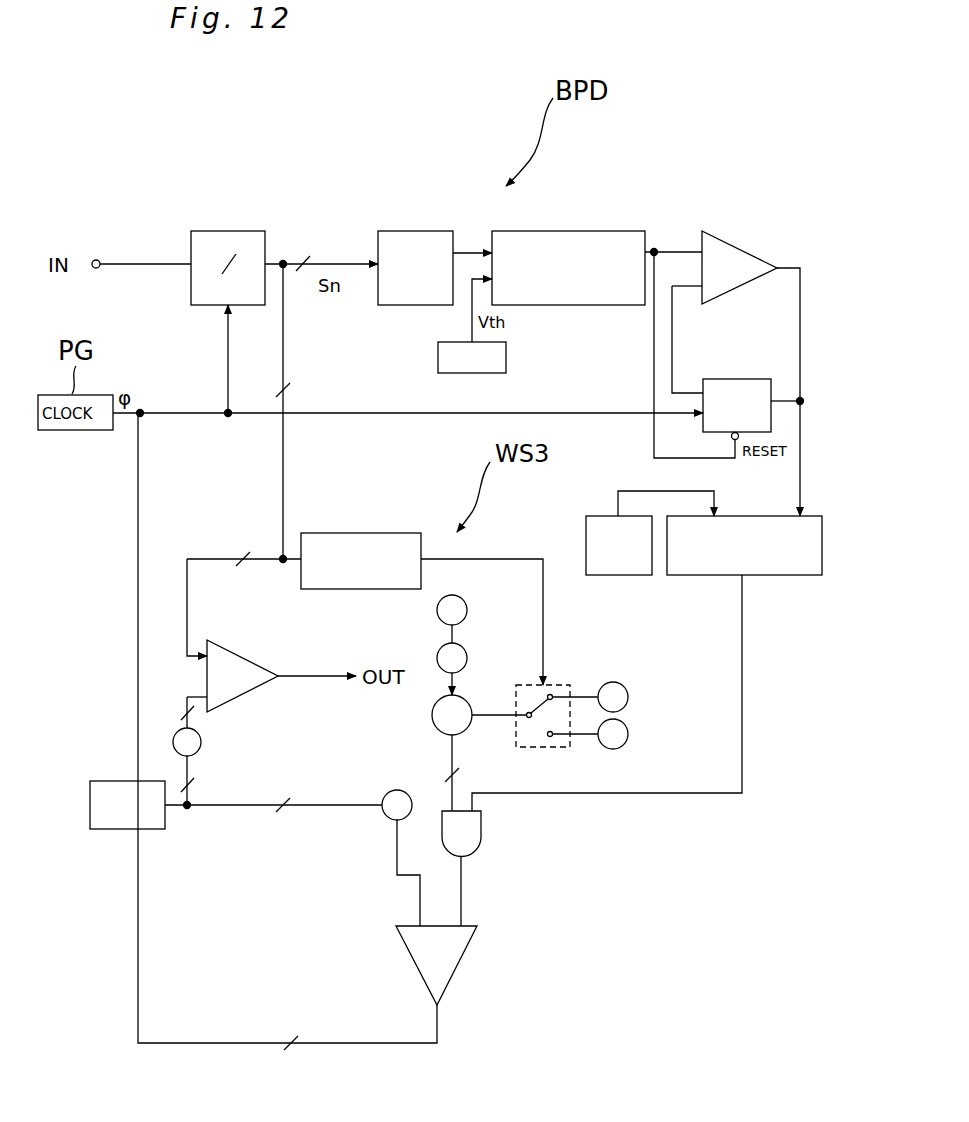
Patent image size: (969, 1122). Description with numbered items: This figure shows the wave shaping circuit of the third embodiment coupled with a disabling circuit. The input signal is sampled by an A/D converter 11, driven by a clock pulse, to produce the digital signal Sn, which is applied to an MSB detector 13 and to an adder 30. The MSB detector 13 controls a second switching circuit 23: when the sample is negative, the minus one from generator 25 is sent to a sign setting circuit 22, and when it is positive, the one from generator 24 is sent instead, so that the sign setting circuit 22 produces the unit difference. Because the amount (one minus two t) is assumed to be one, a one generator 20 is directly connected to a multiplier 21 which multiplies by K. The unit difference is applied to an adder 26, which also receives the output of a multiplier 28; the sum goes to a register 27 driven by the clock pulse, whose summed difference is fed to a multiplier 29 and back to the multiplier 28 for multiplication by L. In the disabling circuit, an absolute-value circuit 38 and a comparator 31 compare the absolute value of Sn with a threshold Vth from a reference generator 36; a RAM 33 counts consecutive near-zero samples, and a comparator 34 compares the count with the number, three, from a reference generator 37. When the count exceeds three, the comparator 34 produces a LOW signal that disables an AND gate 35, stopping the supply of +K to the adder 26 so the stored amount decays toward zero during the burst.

The A/D converter 11 is at (242, 230).
The absolute-value circuit 38 is at (420, 230).
The comparator 31 is at (605, 232).
The sign setting circuit 22 is at (735, 250).
The RAM 33 is at (745, 380).
The reference generator 36 is at (506, 359).
The reference generator 37 is at (640, 572).
The comparator 34 is at (788, 575).
The MSB detector 13 is at (352, 532).
The adder 30 is at (232, 644).
The multiplier 29 is at (201, 742).
The register 27 is at (160, 829).
The multiplier 28 is at (386, 818).
The "1" generator 20 is at (466, 604).
The multiplier 21 is at (466, 651).
The second switching circuit 23 is at (559, 738).
The generator 24 is at (628, 697).
The generator 25 is at (628, 734).
The AND gate 35 is at (478, 838).
The adder 26 is at (466, 948).